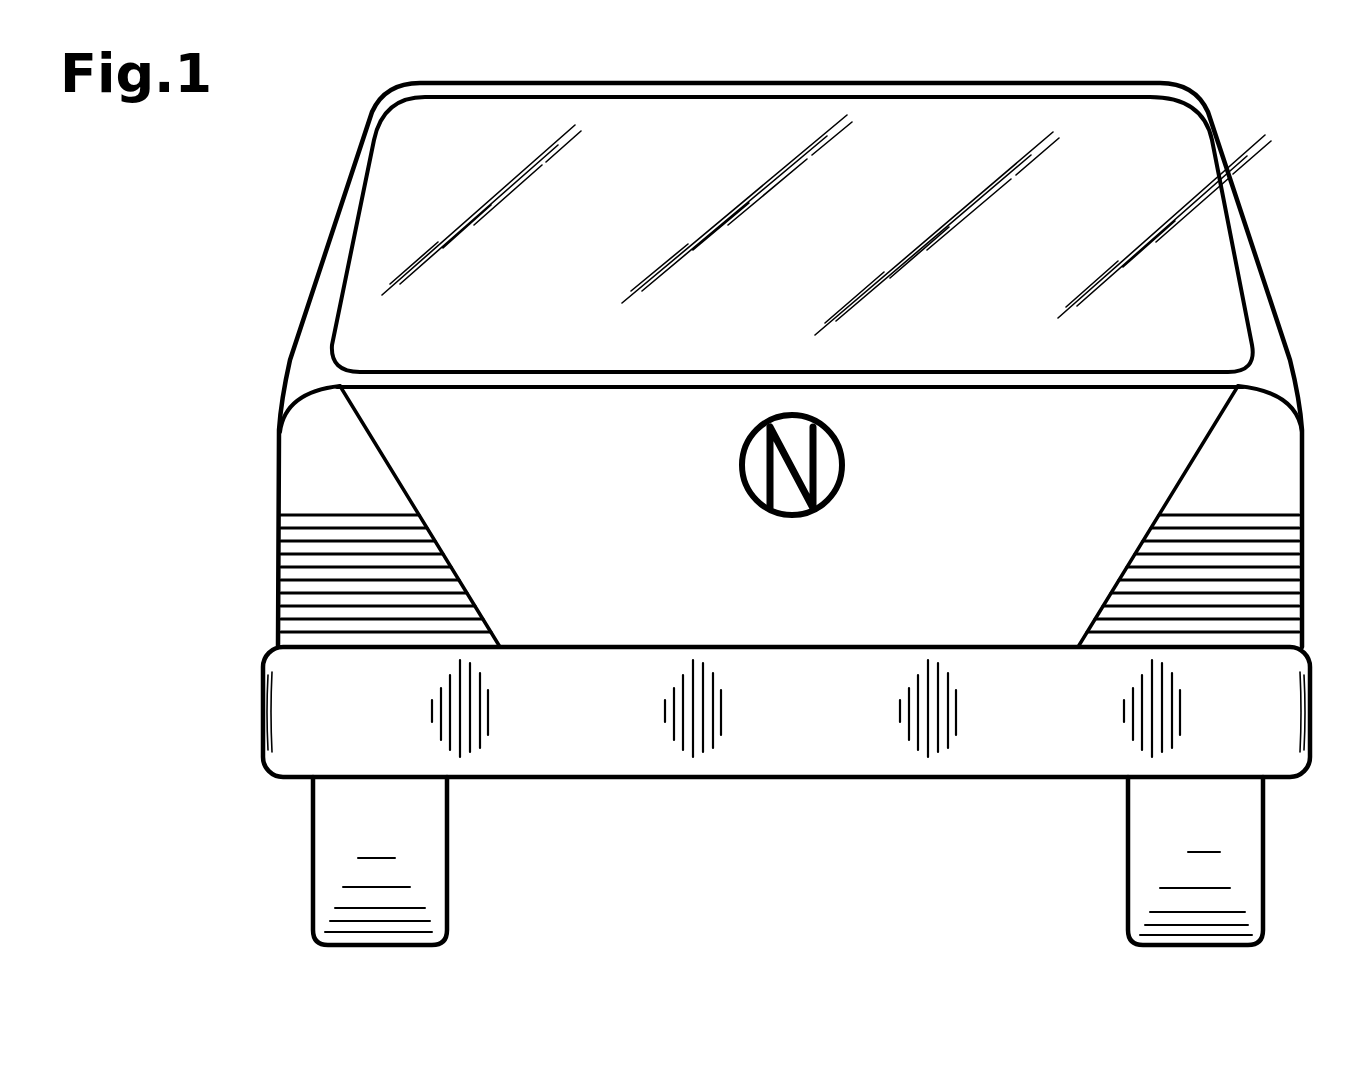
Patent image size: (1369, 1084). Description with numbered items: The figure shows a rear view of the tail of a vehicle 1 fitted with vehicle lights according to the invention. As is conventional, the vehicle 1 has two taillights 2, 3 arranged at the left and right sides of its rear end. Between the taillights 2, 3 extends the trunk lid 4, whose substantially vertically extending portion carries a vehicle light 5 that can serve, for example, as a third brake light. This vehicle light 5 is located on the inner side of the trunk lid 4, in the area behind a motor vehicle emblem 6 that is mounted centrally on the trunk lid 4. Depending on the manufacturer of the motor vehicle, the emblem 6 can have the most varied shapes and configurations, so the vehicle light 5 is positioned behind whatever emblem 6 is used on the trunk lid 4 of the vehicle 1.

The vehicle 1 is at (1276, 217).
The taillight 2 is at (352, 570).
The taillight 3 is at (1278, 577).
The trunk lid 4 is at (532, 567).
The vehicle light 5 is at (782, 487).
The motor vehicle emblem 6 is at (747, 483).